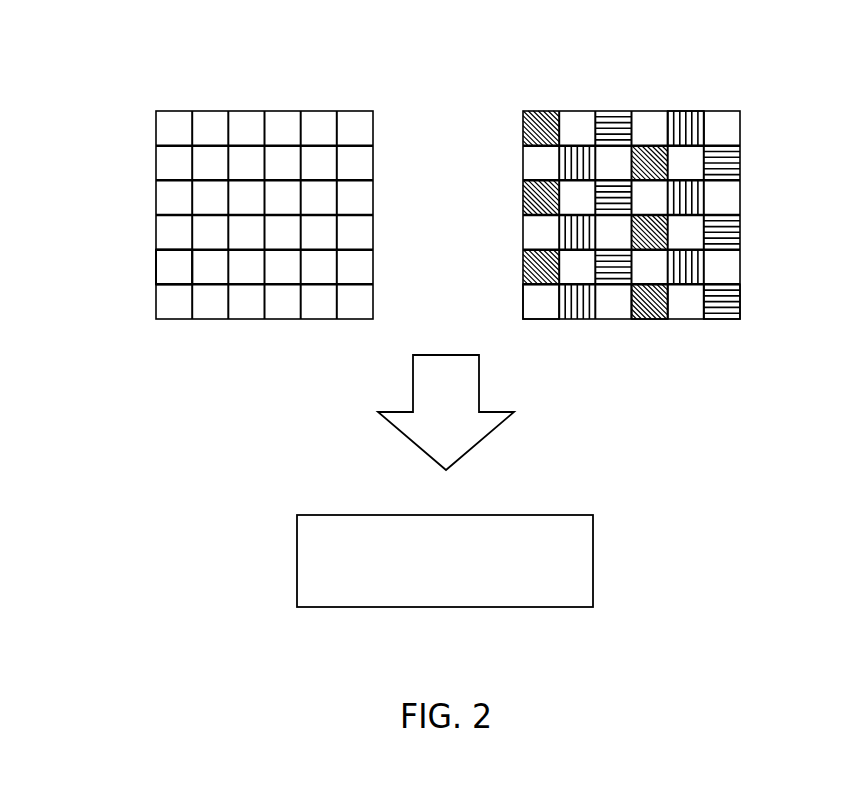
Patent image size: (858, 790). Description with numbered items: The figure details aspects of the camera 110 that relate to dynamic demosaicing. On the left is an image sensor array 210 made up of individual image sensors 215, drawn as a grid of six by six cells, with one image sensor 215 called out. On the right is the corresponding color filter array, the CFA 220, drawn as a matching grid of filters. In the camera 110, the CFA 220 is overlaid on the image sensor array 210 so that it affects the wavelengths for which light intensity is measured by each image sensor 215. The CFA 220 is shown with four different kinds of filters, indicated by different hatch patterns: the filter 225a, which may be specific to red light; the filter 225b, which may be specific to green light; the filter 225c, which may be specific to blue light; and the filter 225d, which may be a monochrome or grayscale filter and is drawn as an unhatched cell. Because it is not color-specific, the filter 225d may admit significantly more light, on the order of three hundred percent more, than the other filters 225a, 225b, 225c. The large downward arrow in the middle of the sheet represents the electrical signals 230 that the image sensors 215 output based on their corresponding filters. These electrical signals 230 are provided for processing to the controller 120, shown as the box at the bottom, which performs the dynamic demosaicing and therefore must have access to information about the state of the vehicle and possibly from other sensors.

The camera 110 is at (156, 47).
The image sensor array 210 is at (283, 98).
The image sensor 215 is at (170, 265).
The color filter array 220 is at (596, 98).
The filter 225a is at (718, 301).
The filter 225b is at (647, 308).
The filter 225c is at (683, 128).
The filter 225d is at (543, 303).
The electrical signals 230 is at (470, 428).
The controller 120 is at (465, 580).